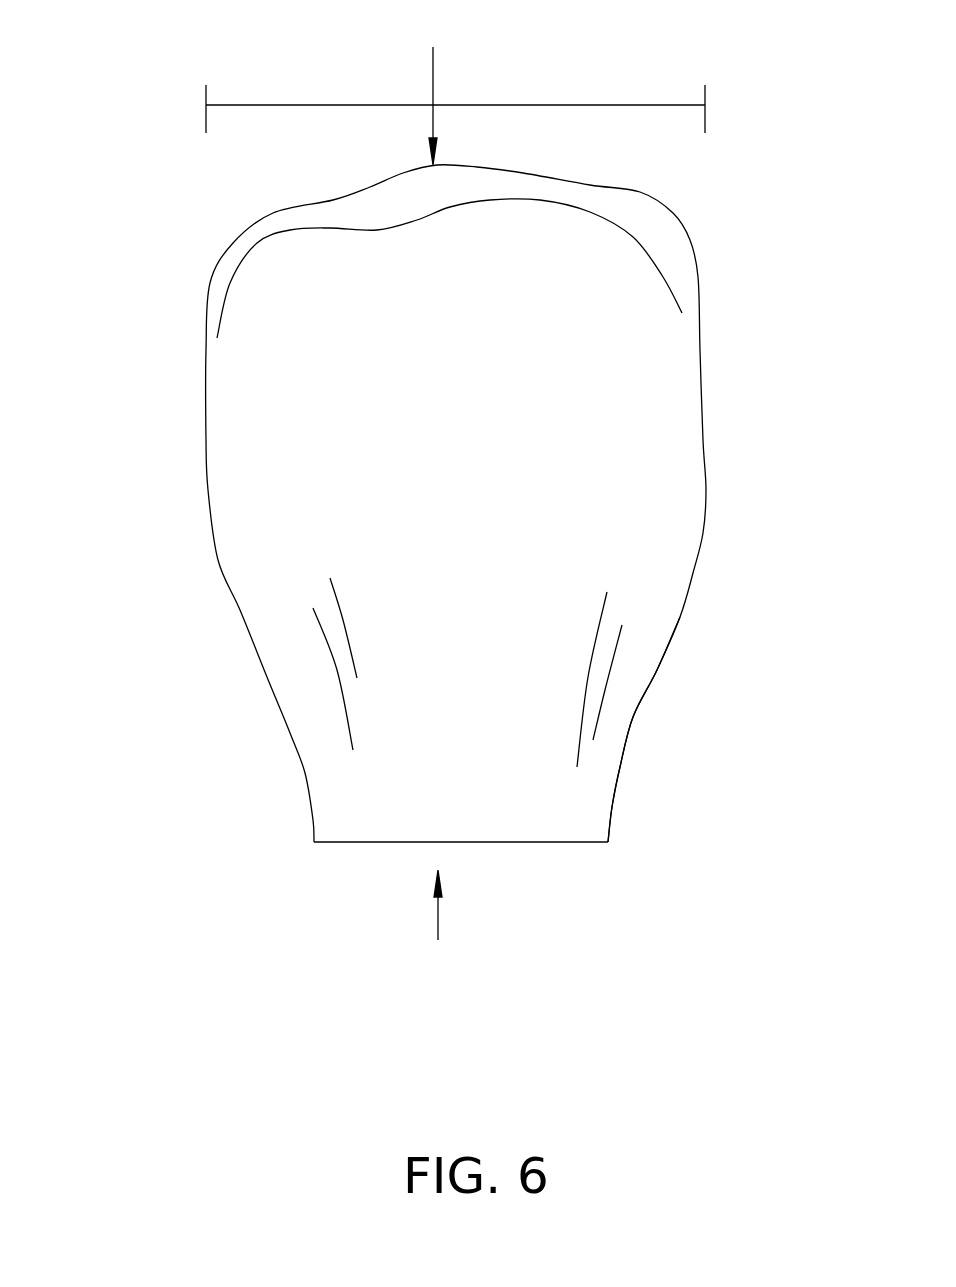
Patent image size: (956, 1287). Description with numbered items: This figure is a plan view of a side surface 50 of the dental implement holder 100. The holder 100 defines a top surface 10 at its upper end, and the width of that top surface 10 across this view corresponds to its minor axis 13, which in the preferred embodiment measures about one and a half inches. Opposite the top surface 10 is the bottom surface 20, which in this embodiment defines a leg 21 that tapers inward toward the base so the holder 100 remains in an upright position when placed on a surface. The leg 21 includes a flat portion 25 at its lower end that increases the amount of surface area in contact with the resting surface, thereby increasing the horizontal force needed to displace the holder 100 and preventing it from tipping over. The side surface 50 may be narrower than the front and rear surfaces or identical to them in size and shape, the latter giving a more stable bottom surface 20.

The holder 100 is at (118, 286).
The side surface 50 is at (528, 428).
The leg 21 is at (573, 797).
The flat portion 25 is at (557, 842).
The minor axis 13 is at (508, 105).
The top surface 10 is at (438, 87).
The bottom surface 20 is at (439, 925).